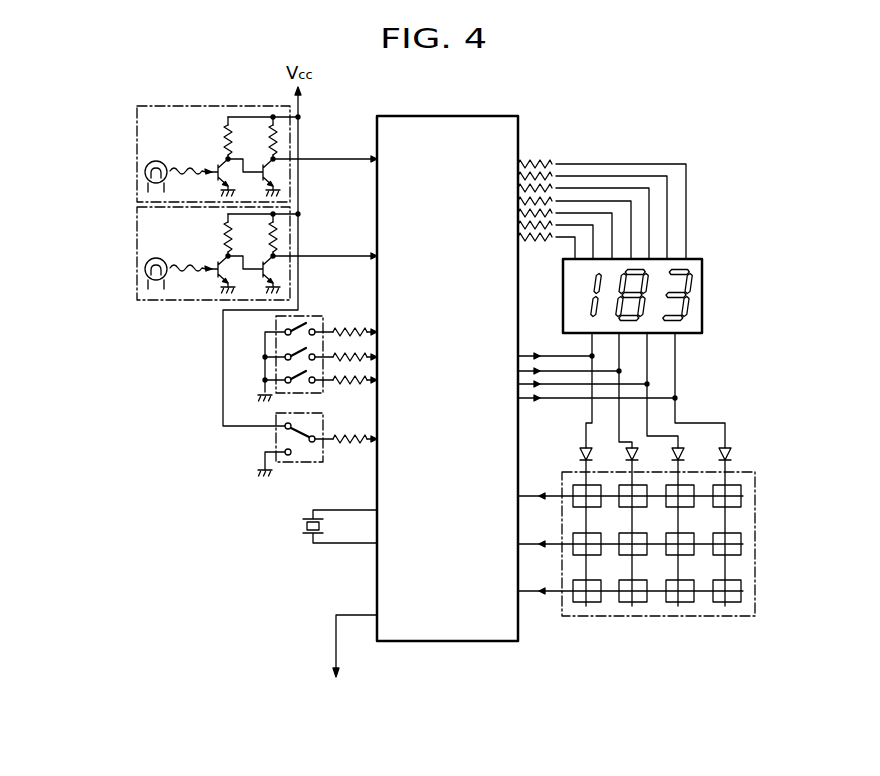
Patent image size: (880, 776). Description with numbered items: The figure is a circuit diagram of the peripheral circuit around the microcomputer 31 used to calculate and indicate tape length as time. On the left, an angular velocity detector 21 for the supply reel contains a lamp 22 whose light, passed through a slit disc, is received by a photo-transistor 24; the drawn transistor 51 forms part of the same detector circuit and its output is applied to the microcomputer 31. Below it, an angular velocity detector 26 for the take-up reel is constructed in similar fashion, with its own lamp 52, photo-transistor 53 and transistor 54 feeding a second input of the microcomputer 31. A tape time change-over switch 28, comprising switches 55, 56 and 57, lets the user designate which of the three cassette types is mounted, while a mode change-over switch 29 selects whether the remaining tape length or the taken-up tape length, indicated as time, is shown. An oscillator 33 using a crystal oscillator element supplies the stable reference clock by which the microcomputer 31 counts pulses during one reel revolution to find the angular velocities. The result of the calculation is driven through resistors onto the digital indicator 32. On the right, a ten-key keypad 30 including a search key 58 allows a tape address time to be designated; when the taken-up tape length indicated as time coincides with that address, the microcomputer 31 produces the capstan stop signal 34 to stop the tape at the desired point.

The angular velocity detector 21 is at (137, 166).
The lamp 22 is at (157, 160).
The photo-transistor 24 is at (216, 168).
The transistor 51 is at (262, 168).
The angular velocity detector 26 is at (137, 255).
The lamp 52 is at (157, 255).
The phototransistor 53 is at (216, 261).
The transistor 54 is at (262, 261).
The tape time change-over switch 28 is at (313, 316).
The switch 55 is at (316, 324).
The switch 56 is at (290, 351).
The switch 57 is at (309, 387).
The mode change-over switch 29 is at (312, 462).
The microcomputer 31 is at (518, 141).
The digital indicator 32 is at (702, 290).
The oscillator 33 is at (302, 534).
The capstan stop signal 34 is at (336, 634).
The 10-key keypad 30 is at (623, 616).
The search key 58 is at (730, 603).